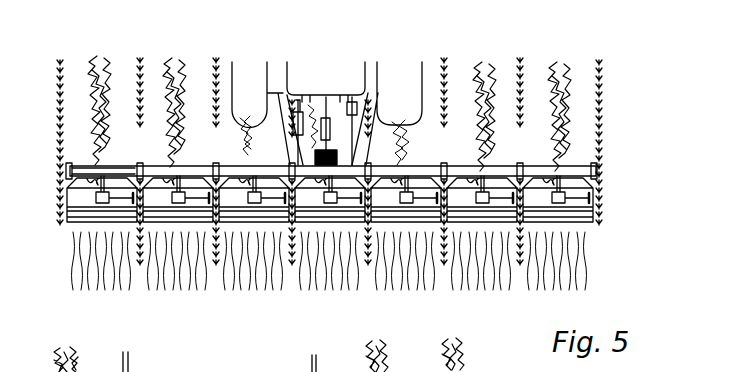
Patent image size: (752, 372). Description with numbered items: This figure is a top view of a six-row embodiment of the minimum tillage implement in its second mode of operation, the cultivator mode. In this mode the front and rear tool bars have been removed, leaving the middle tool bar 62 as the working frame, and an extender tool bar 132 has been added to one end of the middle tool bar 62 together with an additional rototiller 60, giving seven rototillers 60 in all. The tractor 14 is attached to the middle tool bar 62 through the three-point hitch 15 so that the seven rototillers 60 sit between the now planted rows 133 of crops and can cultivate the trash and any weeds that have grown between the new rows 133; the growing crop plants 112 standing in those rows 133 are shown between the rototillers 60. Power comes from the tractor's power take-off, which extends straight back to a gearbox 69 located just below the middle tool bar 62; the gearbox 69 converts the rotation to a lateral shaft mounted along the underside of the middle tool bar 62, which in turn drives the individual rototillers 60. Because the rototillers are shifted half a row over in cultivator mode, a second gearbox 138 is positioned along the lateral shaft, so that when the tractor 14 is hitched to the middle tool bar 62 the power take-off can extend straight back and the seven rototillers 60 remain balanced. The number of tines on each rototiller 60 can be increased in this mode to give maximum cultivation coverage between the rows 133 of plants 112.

The tractor 14 is at (332, 89).
The three-point hitch 15 is at (366, 94).
The rototiller 60 is at (80, 240).
The middle tool bar 62 is at (95, 170).
The gearbox 69 is at (275, 93).
The plants 112 is at (166, 68).
The extender tool bar 132 is at (337, 154).
The planted rows 133 is at (599, 135).
The second gearbox 138 is at (333, 150).